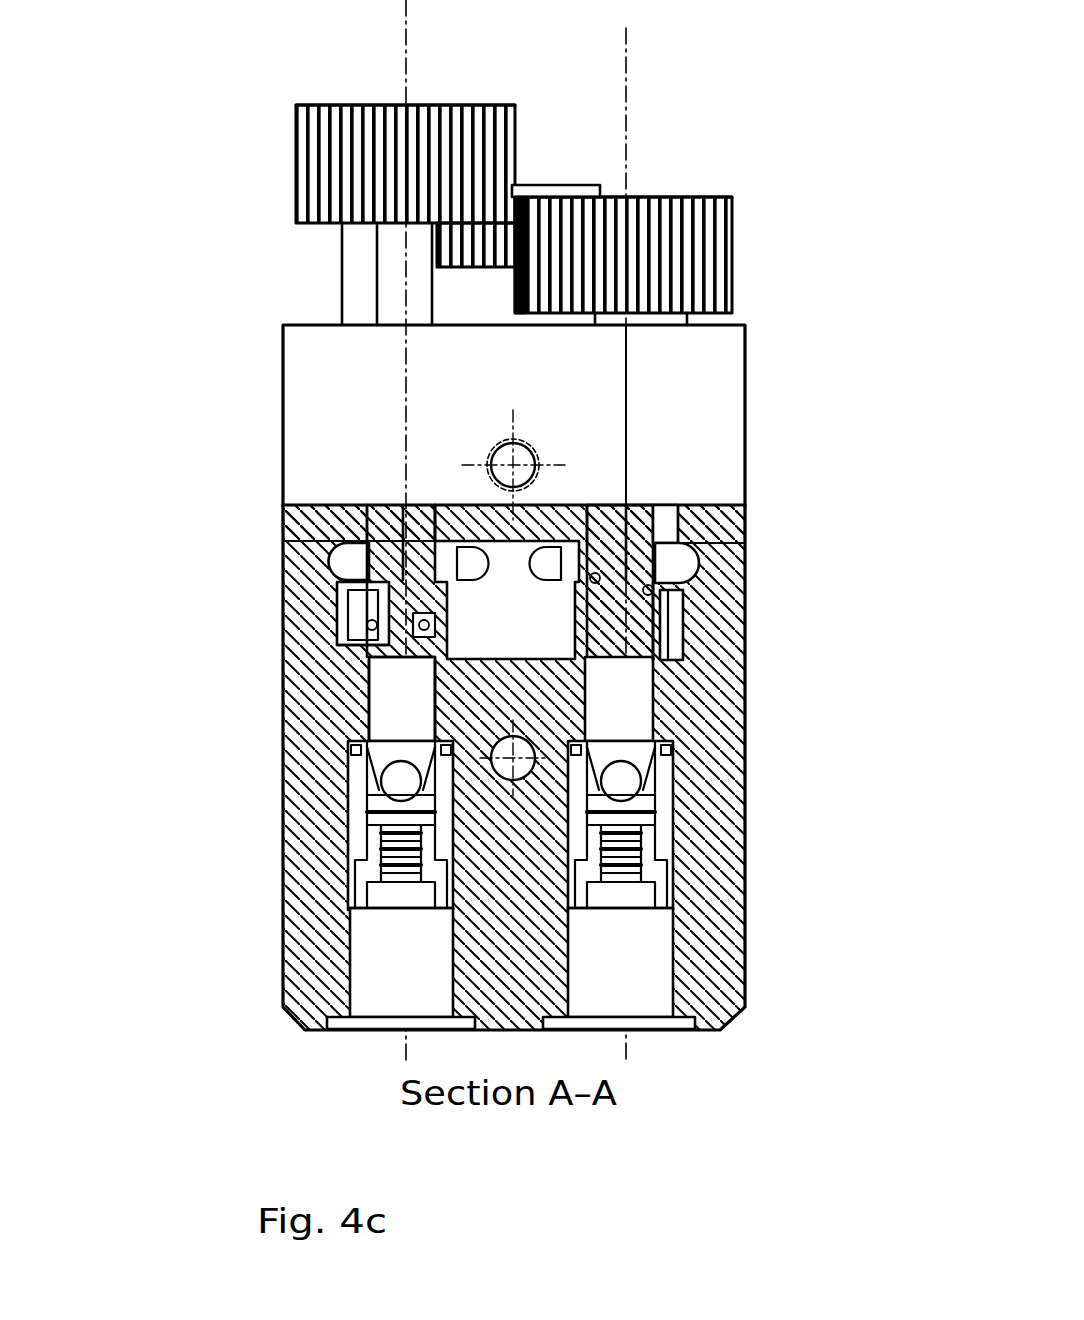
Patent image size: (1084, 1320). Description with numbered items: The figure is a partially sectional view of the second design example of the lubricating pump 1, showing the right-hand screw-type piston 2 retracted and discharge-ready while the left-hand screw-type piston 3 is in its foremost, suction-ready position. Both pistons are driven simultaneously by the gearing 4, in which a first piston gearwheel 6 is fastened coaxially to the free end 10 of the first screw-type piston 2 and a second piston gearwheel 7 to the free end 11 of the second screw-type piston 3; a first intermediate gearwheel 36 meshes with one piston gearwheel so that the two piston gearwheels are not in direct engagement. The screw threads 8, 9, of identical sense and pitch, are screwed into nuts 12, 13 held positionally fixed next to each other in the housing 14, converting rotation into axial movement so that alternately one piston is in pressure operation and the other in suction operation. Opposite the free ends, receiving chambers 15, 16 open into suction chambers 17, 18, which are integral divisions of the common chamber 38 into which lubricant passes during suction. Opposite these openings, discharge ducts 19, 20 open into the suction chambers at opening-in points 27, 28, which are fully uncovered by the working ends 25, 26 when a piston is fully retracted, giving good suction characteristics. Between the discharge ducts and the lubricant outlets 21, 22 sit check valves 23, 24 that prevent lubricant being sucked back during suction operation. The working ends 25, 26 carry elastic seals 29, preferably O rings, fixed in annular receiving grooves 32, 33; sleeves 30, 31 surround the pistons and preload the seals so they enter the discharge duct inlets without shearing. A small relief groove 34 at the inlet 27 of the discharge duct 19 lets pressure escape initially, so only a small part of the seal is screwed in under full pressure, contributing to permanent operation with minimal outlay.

The lubricating pump 1 is at (212, 1056).
The first screw-type piston 2 is at (392, 262).
The second screw-type piston 3 is at (642, 320).
The gearing 4 is at (546, 74).
The first piston gearwheel 6 is at (325, 145).
The second piston gearwheel 7 is at (690, 275).
The screw thread 8 is at (388, 532).
The screw thread 9 is at (606, 629).
The free end 10 is at (380, 96).
The free end 11 is at (634, 186).
The nut 12 is at (369, 545).
The nut 13 is at (672, 565).
The housing 14 is at (733, 1000).
The receiving chamber 15 is at (450, 522).
The receiving chamber 16 is at (578, 526).
The suction chamber 17 is at (343, 646).
The suction chamber 18 is at (687, 588).
The discharge duct 19 is at (357, 763).
The discharge duct 20 is at (640, 770).
The lubricant outlet 21 is at (371, 983).
The lubricant outlet 22 is at (643, 990).
The check valve 23 is at (380, 908).
The check valve 24 is at (640, 872).
The working end 25 is at (405, 668).
The working end 26 is at (650, 757).
The opening-in point 27 is at (438, 659).
The opening-in point 28 is at (628, 650).
The elastic seal 29 is at (345, 640).
The sleeve 30 is at (455, 624).
The sleeve 31 is at (680, 615).
The annular receiving groove 32 is at (372, 604).
The annular receiving groove 33 is at (660, 695).
The relief groove 34 is at (388, 727).
The first intermediate gearwheel 36 is at (537, 190).
The chamber 38 is at (545, 758).